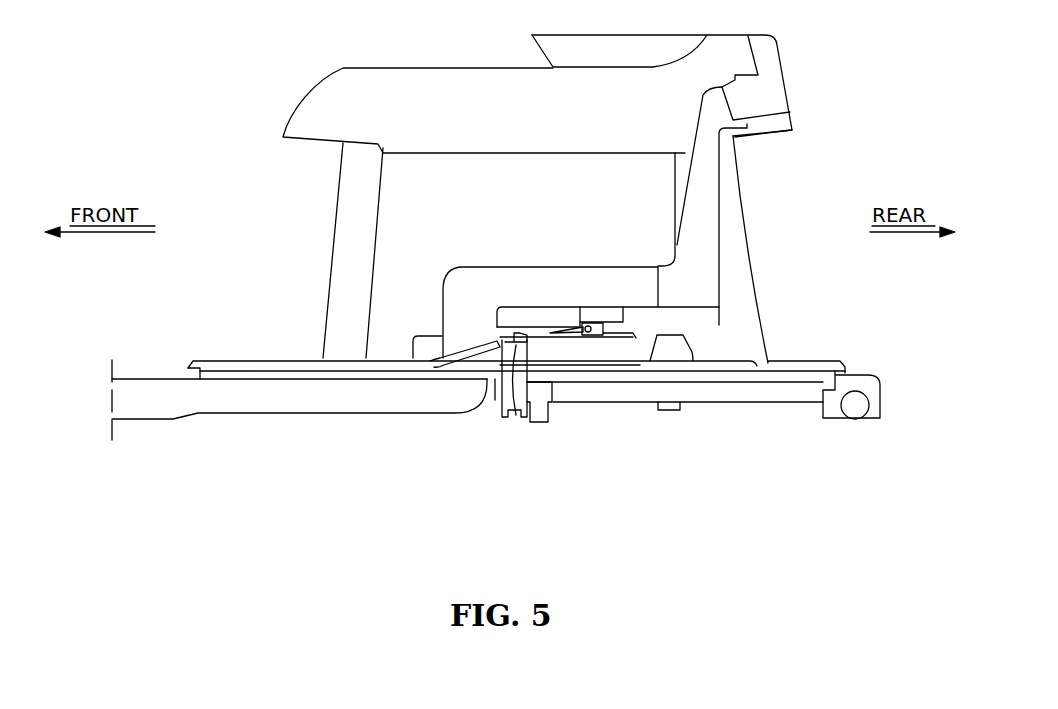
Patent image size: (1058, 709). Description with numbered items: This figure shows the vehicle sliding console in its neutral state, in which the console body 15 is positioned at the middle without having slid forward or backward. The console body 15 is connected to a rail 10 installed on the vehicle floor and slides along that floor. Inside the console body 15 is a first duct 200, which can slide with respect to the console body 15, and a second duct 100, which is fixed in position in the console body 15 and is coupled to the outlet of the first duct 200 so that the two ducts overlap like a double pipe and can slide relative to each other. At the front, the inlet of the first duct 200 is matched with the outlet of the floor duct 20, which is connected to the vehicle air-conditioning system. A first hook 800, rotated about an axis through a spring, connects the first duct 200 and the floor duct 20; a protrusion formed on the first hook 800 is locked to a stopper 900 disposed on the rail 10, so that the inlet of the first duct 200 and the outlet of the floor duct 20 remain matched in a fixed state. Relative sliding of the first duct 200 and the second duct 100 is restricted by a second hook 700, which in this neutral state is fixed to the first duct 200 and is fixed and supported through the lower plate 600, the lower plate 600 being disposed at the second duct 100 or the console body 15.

The console body 15 is at (405, 222).
The second duct 100 is at (702, 247).
The first duct 200 is at (473, 290).
The lower plate 600 is at (597, 336).
The second hook 700 is at (574, 333).
The first hook 800 is at (500, 347).
The stopper 900 is at (516, 370).
The rail 10 is at (763, 387).
The floor duct 20 is at (352, 395).